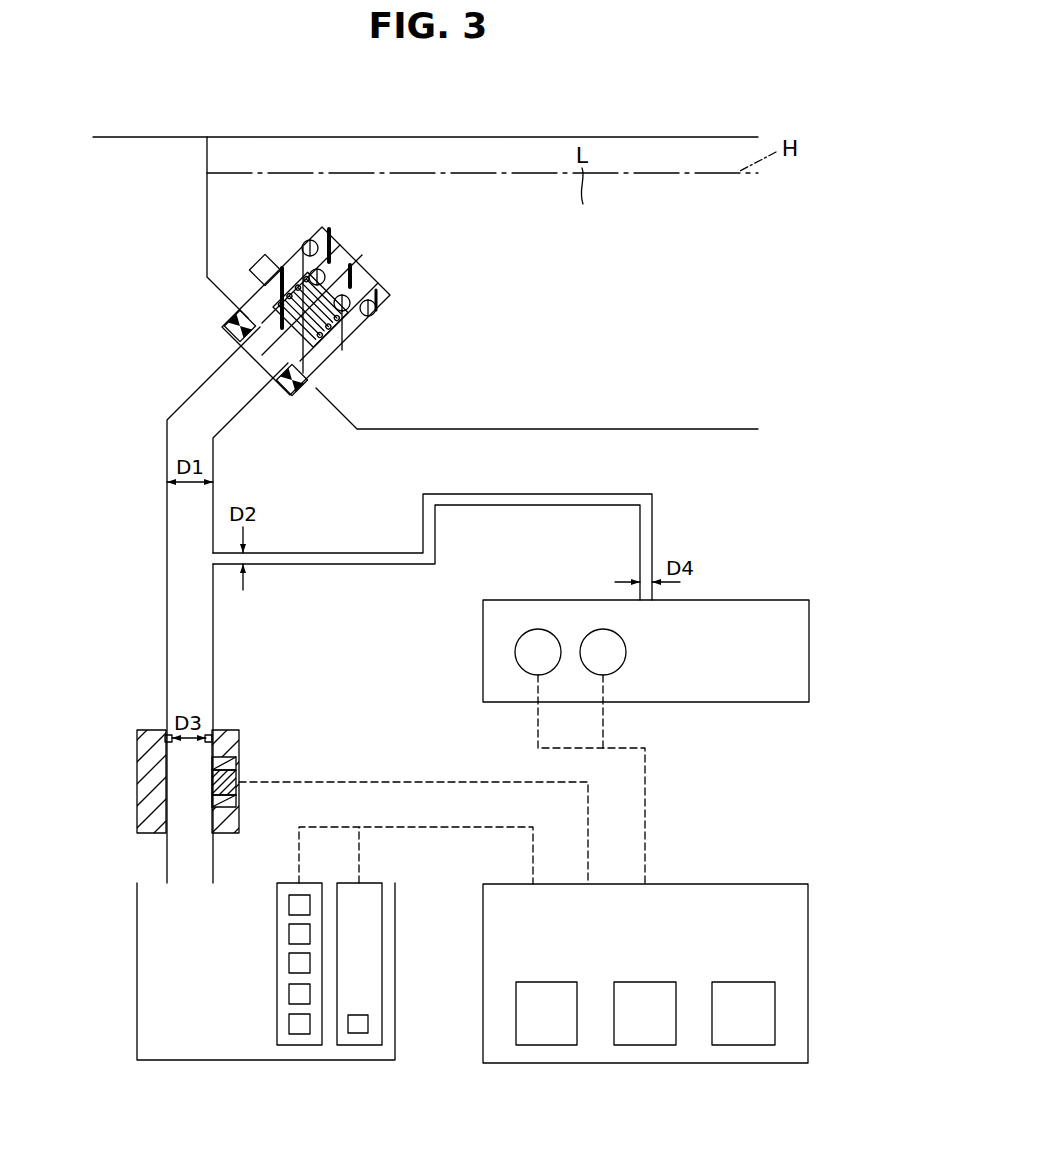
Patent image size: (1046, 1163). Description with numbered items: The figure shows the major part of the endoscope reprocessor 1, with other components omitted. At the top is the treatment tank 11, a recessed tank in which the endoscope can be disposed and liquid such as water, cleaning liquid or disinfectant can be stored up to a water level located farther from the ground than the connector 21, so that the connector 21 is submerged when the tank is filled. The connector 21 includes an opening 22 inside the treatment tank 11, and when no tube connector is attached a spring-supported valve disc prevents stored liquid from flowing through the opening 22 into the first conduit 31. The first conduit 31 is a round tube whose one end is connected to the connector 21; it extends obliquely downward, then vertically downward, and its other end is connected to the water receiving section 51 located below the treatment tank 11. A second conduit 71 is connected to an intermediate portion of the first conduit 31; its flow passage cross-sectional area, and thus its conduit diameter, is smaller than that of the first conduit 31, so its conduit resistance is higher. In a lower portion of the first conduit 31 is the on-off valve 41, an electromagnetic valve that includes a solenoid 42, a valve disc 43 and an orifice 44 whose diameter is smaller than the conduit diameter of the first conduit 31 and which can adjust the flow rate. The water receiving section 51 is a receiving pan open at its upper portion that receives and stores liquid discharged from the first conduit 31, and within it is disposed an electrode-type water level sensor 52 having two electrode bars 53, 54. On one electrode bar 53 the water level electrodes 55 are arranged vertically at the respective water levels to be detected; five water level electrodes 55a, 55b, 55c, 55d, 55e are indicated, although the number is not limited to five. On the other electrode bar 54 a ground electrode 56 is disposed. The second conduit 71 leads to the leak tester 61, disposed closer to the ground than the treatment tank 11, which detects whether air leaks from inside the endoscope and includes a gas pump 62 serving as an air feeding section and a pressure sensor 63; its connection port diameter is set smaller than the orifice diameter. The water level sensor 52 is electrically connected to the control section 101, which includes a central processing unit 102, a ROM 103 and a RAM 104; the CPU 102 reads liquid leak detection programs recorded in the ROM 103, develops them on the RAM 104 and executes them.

The endoscope reprocessor 1 is at (760, 88).
The treatment tank 11 is at (665, 137).
The connector 21 is at (270, 276).
The opening 22 is at (359, 277).
The first conduit 31 is at (167, 529).
The on-off valve 41 is at (137, 784).
The solenoid 42 is at (238, 758).
The valve disc 43 is at (238, 788).
The orifice 44 is at (206, 735).
The water receiving section 51 is at (137, 964).
The water level sensor 52 is at (318, 942).
The electrode bar 53 is at (277, 892).
The electrode bar 54 is at (382, 975).
The water level electrodes 55 is at (245, 966).
The water level electrode 55a is at (263, 1026).
The water level electrode 55b is at (289, 994).
The water level electrode 55c is at (289, 964).
The water level electrode 55d is at (289, 935).
The water level electrode 55e is at (289, 906).
The ground electrode 56 is at (368, 1024).
The leak tester 61 is at (763, 600).
The gas pump 62 is at (532, 630).
The pressure sensor 63 is at (597, 630).
The second conduit 71 is at (590, 494).
The control section 101 is at (553, 968).
The central processing unit 102 is at (548, 1045).
The ROM 103 is at (646, 1045).
The RAM 104 is at (745, 1045).